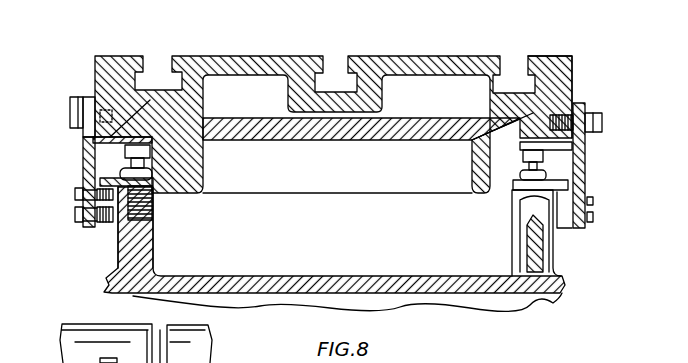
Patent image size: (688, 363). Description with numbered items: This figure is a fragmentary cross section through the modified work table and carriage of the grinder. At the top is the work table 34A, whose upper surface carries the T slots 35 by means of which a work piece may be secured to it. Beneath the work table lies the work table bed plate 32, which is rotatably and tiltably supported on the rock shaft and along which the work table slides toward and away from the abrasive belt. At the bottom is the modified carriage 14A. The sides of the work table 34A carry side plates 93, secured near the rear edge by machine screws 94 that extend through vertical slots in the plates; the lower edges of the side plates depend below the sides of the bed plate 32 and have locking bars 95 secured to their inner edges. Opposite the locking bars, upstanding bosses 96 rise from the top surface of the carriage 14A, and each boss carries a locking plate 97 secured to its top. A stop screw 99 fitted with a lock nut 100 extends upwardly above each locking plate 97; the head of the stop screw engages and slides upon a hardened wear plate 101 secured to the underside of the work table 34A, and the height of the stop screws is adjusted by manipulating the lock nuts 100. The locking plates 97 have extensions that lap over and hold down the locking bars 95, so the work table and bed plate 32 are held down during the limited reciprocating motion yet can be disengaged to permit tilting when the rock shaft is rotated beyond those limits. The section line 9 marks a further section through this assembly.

The T slots 35 is at (503, 70).
The work table 34A is at (554, 63).
The work table bed plate 32 is at (475, 137).
The hardened wear plates 101 is at (123, 133).
The side plates 93 is at (83, 176).
The machine screws 94 is at (73, 100).
The section line 9 is at (36, 133).
The locking plate 97 is at (97, 166).
The lock nut 100 is at (150, 180).
The stop screw 99 is at (152, 222).
The locking bars 95 is at (107, 225).
The upstanding bosses 96 is at (125, 250).
The carriage 14A is at (307, 282).